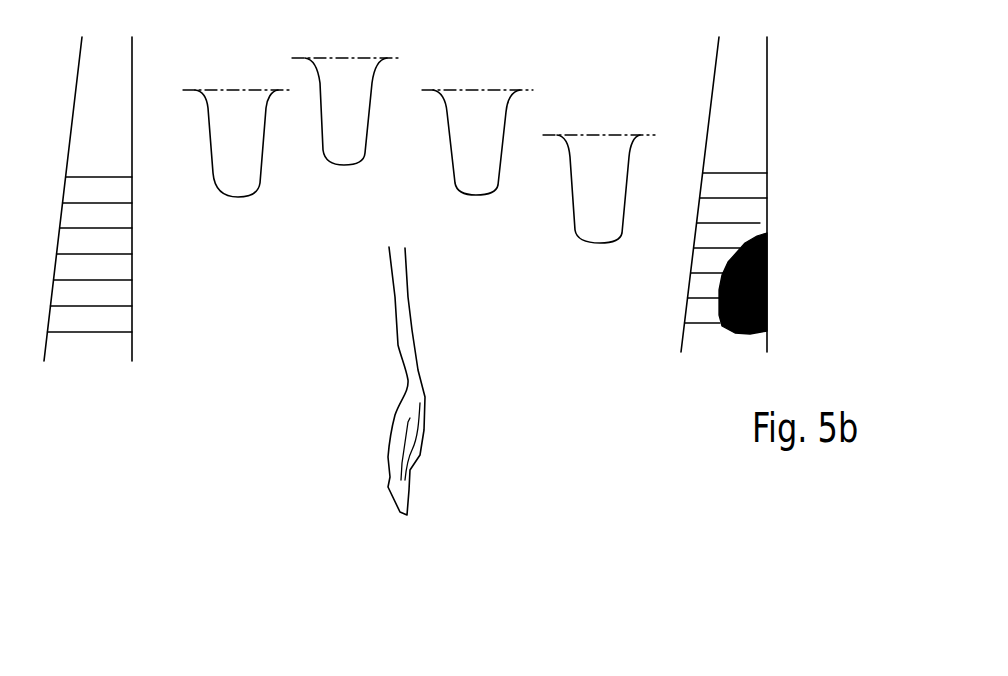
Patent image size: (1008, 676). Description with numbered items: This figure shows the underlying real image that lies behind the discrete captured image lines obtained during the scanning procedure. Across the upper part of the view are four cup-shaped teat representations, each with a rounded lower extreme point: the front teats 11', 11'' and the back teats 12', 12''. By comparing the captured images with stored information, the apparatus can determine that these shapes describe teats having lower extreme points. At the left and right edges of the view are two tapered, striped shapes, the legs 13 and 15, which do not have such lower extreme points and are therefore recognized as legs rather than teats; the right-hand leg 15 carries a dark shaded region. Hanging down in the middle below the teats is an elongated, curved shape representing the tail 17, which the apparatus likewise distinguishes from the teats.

The leg 13 is at (107, 338).
The front teat 11' is at (238, 197).
The back teat 12' is at (346, 169).
The back teat 12'' is at (477, 200).
The front teat 11'' is at (599, 244).
The tail 17 is at (388, 505).
The leg 15 is at (717, 332).